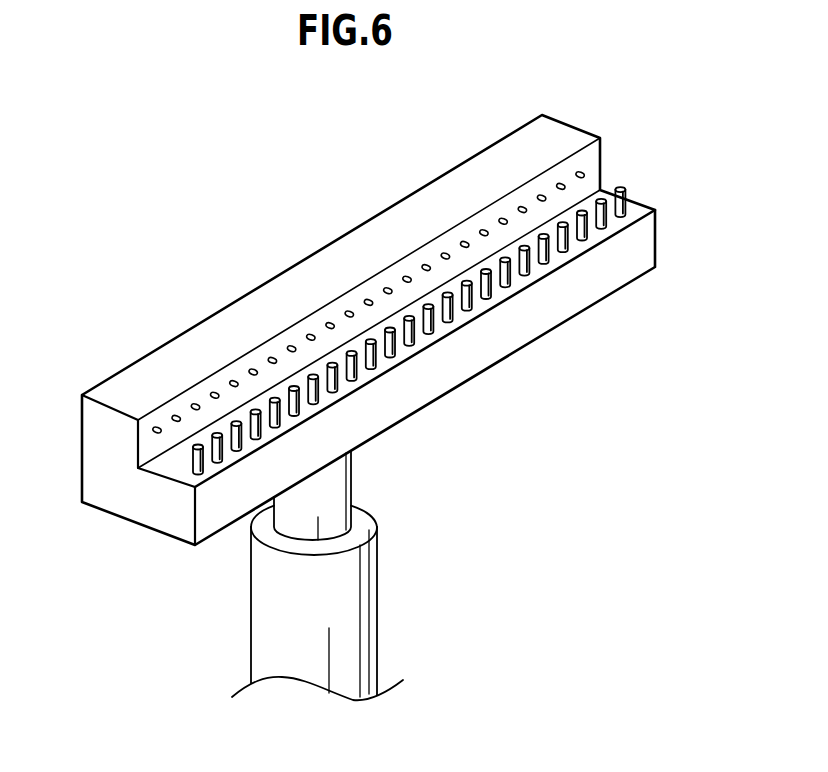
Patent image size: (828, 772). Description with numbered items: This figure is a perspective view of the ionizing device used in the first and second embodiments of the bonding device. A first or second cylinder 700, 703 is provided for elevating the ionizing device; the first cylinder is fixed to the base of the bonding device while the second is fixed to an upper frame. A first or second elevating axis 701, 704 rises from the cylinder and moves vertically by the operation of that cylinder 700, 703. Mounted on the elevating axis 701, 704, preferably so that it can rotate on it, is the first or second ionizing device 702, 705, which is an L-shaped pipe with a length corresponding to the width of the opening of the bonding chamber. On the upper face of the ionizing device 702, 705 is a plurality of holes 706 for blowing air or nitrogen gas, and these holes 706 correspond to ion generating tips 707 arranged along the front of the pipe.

The first cylinder 700 is at (382, 603).
The second cylinder 703 is at (362, 607).
The first elevating axis 701 is at (394, 495).
The second elevating axis 704 is at (342, 483).
The first ionizing device 702 is at (368, 330).
The second ionizing device 705 is at (395, 231).
The holes 706 is at (256, 371).
The ion generating tips 707 is at (549, 253).